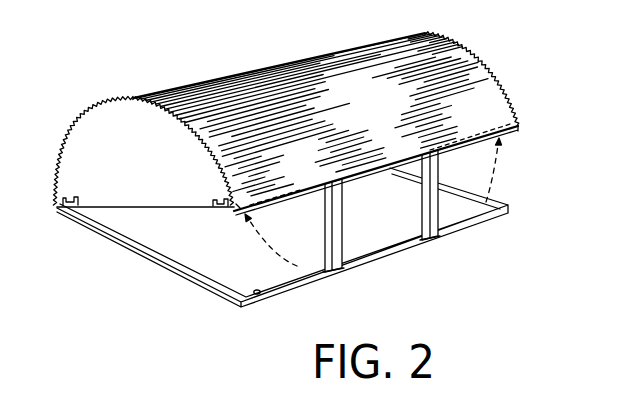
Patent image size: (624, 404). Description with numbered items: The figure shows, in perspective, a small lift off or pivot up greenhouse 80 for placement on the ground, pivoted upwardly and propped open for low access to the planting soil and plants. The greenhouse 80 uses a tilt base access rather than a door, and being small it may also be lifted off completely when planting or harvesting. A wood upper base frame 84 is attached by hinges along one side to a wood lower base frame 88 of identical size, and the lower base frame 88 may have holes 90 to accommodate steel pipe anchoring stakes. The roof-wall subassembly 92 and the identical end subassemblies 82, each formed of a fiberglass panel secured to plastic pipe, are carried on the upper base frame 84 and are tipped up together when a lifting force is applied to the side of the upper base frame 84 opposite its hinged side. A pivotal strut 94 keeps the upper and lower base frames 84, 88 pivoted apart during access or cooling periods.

The small greenhouse 80 is at (228, 66).
The end subassembly 82 is at (147, 164).
The upper base frame 84 is at (165, 208).
The lower base frame 88 is at (175, 279).
The hole 90 is at (258, 294).
The roof-wall subassembly 92 is at (499, 90).
The pivotal strut 94 is at (342, 227).